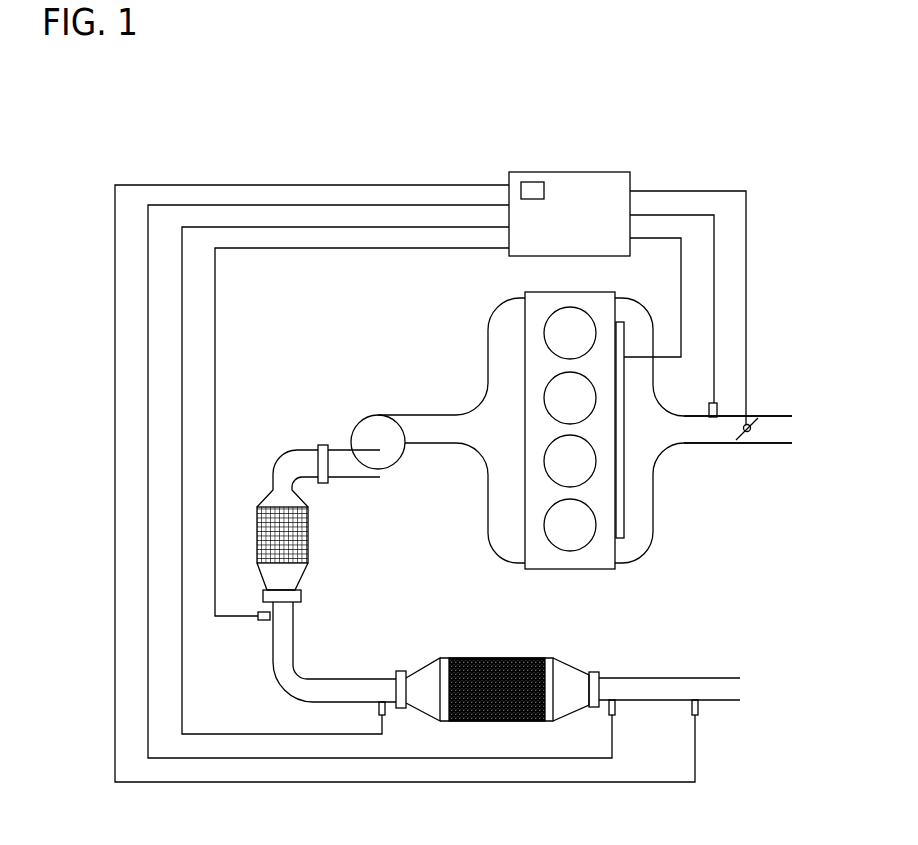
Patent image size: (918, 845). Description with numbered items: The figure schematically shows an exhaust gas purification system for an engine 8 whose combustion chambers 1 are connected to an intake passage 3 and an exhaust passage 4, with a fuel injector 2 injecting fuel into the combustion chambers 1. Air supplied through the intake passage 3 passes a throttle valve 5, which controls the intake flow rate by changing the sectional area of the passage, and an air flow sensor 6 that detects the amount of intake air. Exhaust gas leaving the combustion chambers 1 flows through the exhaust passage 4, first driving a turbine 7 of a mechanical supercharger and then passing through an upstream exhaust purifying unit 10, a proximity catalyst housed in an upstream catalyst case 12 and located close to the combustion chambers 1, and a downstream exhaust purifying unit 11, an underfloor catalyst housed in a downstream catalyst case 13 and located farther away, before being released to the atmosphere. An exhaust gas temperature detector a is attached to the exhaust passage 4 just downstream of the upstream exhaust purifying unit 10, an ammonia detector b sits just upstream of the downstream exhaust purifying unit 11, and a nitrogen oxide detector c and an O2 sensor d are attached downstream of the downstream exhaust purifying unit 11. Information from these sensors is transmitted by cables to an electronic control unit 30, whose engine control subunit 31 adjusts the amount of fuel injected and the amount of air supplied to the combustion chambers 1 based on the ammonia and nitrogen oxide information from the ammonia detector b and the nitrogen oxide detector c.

The combustion chambers 1 is at (557, 343).
The fuel injector 2 is at (618, 487).
The intake passage 3 is at (766, 443).
The exhaust passage 4 is at (300, 457).
The throttle valve 5 is at (753, 424).
The air flow sensor 6 is at (718, 411).
The turbine 7 is at (379, 465).
The engine 8 is at (613, 574).
The upstream exhaust purifying unit 10 is at (314, 541).
The downstream exhaust purifying unit 11 is at (526, 652).
The upstream catalyst case 12 is at (293, 577).
The downstream catalyst case 13 is at (422, 670).
The electronic control unit 30 is at (594, 166).
The engine control subunit 31 is at (534, 190).
The exhaust gas temperature detector a is at (262, 622).
The ammonia detector b is at (386, 708).
The nitrogen oxide detector c is at (615, 708).
The O2 sensor d is at (698, 708).